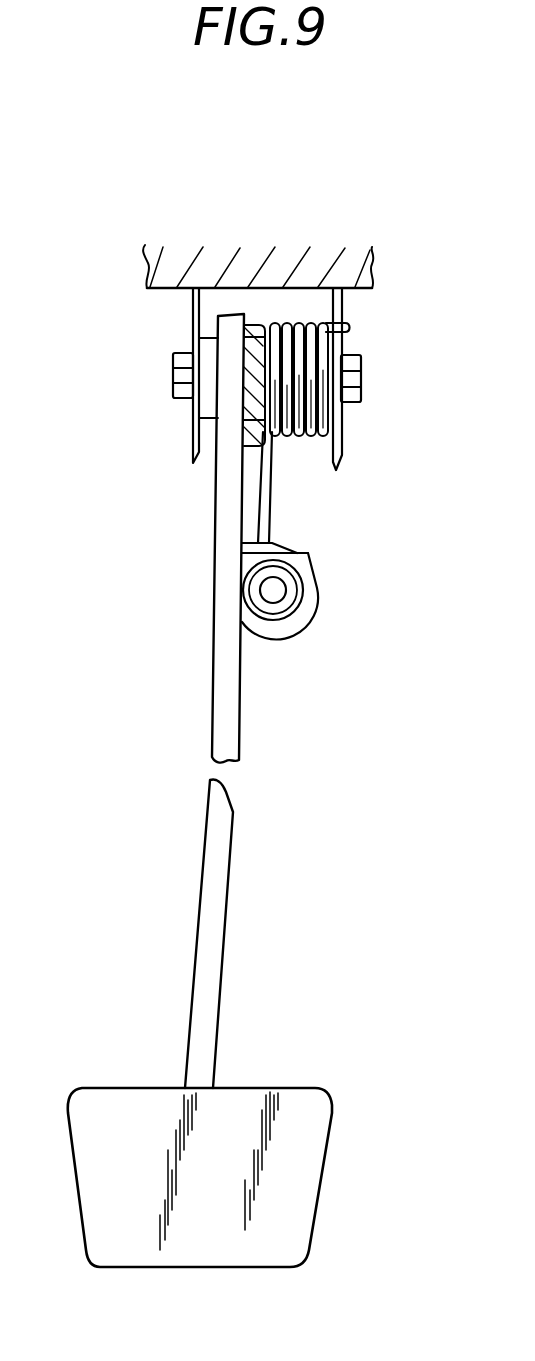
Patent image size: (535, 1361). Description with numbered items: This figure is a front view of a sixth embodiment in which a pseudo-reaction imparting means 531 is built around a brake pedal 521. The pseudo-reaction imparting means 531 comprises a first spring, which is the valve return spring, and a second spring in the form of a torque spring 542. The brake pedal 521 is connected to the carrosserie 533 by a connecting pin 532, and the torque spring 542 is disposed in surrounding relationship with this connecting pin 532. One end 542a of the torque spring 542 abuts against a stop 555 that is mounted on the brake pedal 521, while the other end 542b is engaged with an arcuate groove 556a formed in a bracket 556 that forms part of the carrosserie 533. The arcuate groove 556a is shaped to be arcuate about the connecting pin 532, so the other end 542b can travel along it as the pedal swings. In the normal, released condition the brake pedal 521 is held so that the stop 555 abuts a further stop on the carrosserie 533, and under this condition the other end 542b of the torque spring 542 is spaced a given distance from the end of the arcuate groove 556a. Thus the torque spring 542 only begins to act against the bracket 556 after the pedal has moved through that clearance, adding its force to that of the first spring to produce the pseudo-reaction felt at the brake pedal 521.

The brake pedal 521 is at (228, 722).
The pseudo-reaction imparting means 531 is at (343, 422).
The connecting pin 532 is at (173, 377).
The carrosserie 533 is at (228, 258).
The torque spring 542 is at (300, 443).
The one end of the torque spring 542a is at (272, 523).
The other end of the torque spring 542b is at (345, 330).
The stop 555 is at (310, 598).
The bracket 556 is at (343, 448).
The arcuate groove 556a is at (347, 333).